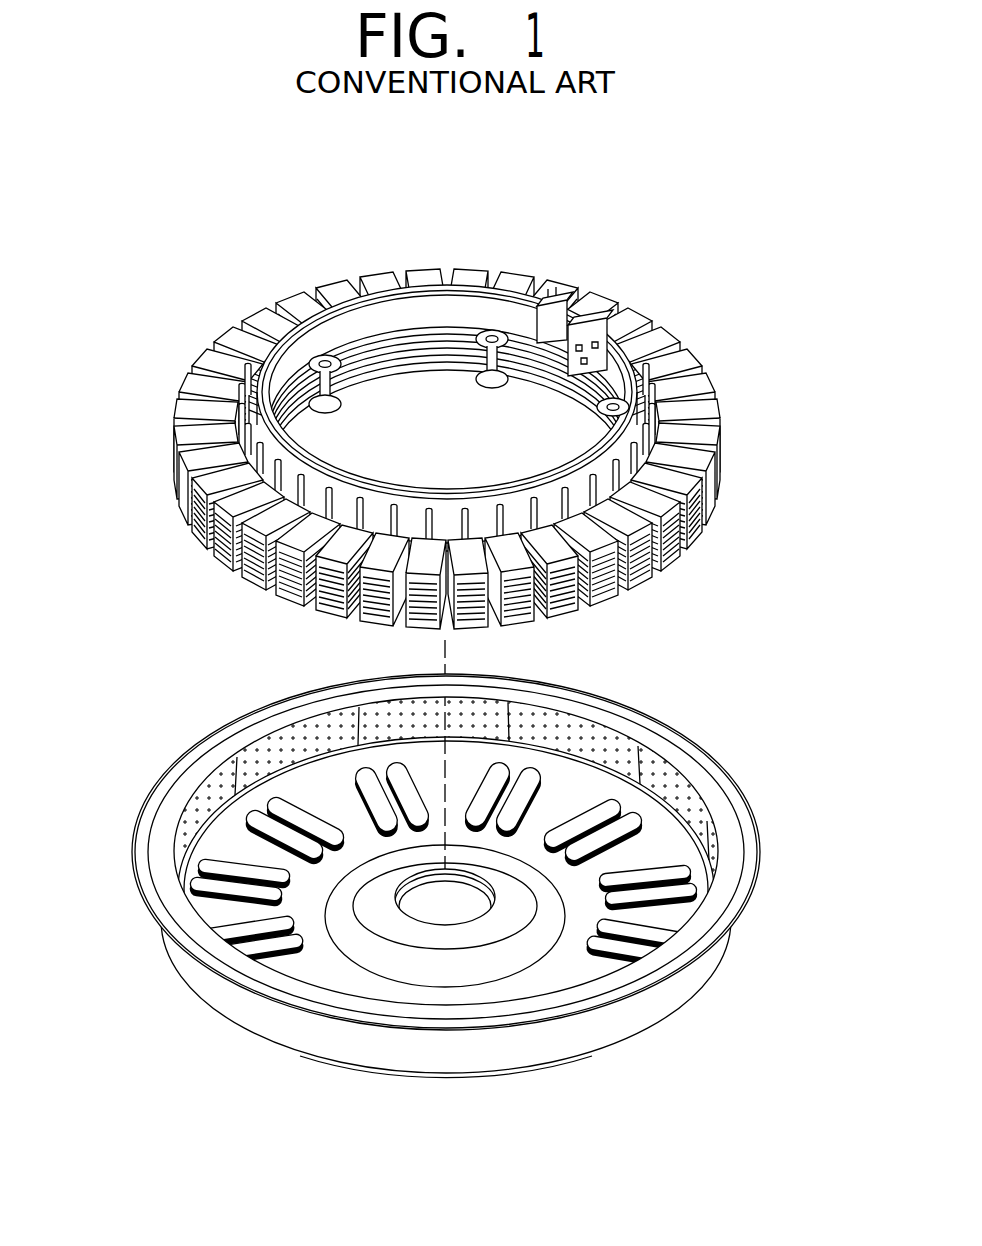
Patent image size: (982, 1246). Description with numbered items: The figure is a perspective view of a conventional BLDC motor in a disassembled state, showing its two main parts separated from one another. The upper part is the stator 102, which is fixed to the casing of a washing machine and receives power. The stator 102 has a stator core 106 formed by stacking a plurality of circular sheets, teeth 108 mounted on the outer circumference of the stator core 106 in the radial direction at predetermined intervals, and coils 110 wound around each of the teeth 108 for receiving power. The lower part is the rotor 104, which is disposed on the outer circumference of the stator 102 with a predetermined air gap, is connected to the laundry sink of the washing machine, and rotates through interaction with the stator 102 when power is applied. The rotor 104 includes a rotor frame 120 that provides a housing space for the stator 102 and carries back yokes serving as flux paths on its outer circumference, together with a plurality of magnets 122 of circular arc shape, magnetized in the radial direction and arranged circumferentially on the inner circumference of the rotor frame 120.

The stator 102 is at (447, 421).
The rotor 104 is at (470, 845).
The stator core 106 is at (322, 333).
The teeth 108 is at (687, 545).
The coils 110 is at (673, 363).
The rotor frame 120 is at (732, 793).
The magnets 122 is at (667, 763).